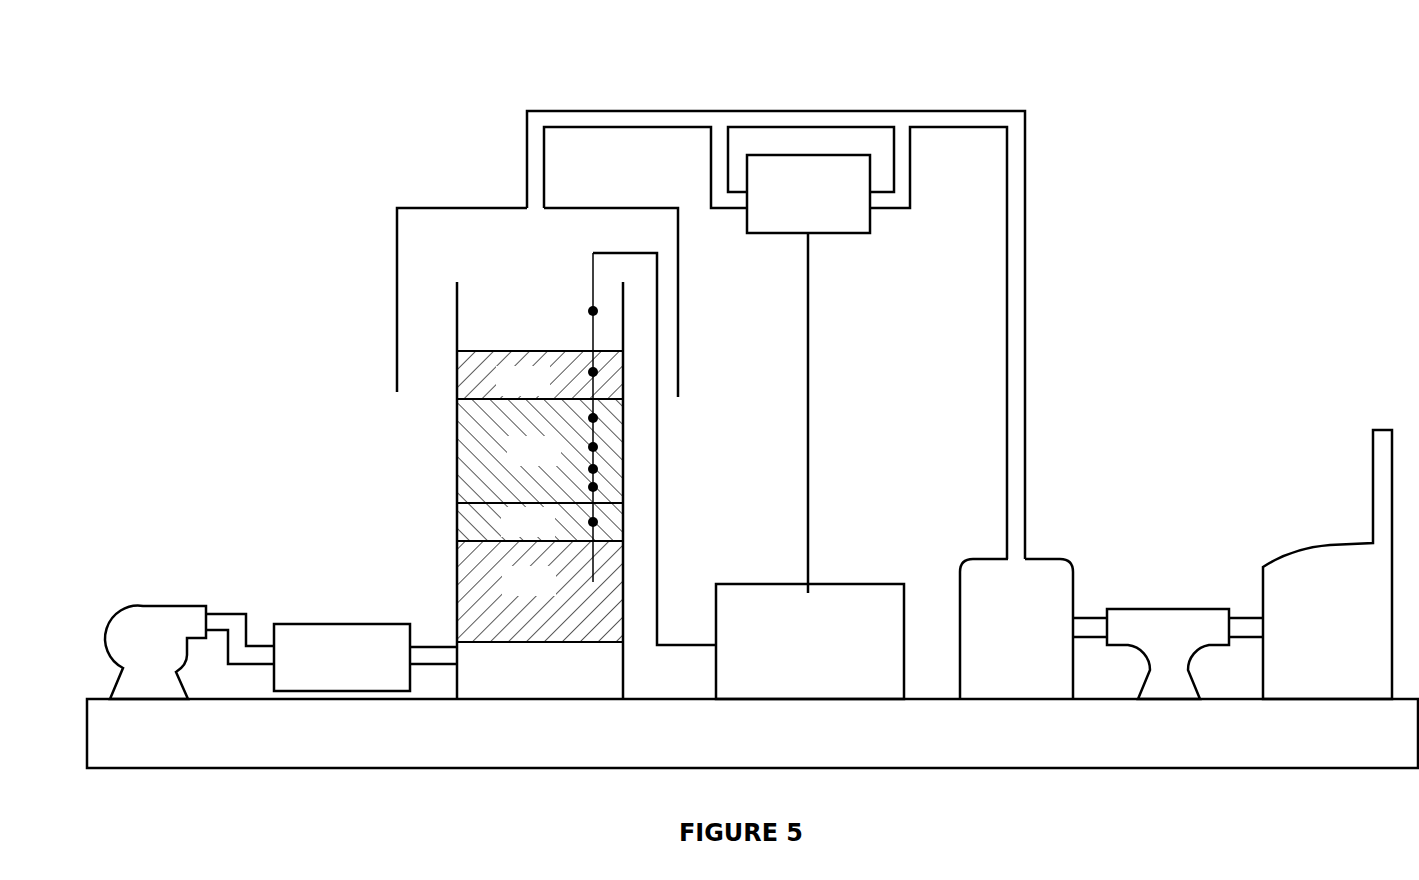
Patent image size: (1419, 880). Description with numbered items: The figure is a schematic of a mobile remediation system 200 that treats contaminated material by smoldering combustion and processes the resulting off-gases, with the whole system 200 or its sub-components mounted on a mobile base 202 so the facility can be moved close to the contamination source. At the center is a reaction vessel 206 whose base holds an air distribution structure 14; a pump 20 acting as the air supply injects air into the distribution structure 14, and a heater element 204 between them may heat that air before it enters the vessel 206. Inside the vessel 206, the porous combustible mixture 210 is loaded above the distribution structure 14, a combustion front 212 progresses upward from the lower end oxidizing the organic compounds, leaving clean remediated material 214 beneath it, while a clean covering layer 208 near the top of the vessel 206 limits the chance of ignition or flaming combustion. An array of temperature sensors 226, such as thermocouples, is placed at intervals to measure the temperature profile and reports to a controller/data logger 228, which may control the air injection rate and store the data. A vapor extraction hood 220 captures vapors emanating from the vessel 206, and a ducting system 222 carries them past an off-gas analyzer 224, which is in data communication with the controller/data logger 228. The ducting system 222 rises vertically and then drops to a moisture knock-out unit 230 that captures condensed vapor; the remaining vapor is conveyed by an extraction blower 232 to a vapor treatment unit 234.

The remediation system 200 is at (1186, 176).
The mobile base 202 is at (1135, 768).
The pump 20 is at (143, 606).
The heater element 204 is at (308, 624).
The reaction vessel 206 is at (459, 306).
The clean covering layer 208 is at (497, 394).
The porous combustible mixture 210 is at (508, 464).
The combustion front 212 is at (502, 534).
The remediated material 214 is at (503, 594).
The air distribution structure 14 is at (512, 679).
The vapor extraction hood 220 is at (397, 292).
The ducting system 222 is at (607, 111).
The off-gas analyzer 224 is at (838, 233).
The temperature sensors 226 is at (592, 311).
The controller/data logger 228 is at (848, 584).
The moisture knock-out unit 230 is at (1049, 556).
The extraction blower 232 is at (1163, 609).
The vapor treatment unit 234 is at (1305, 546).